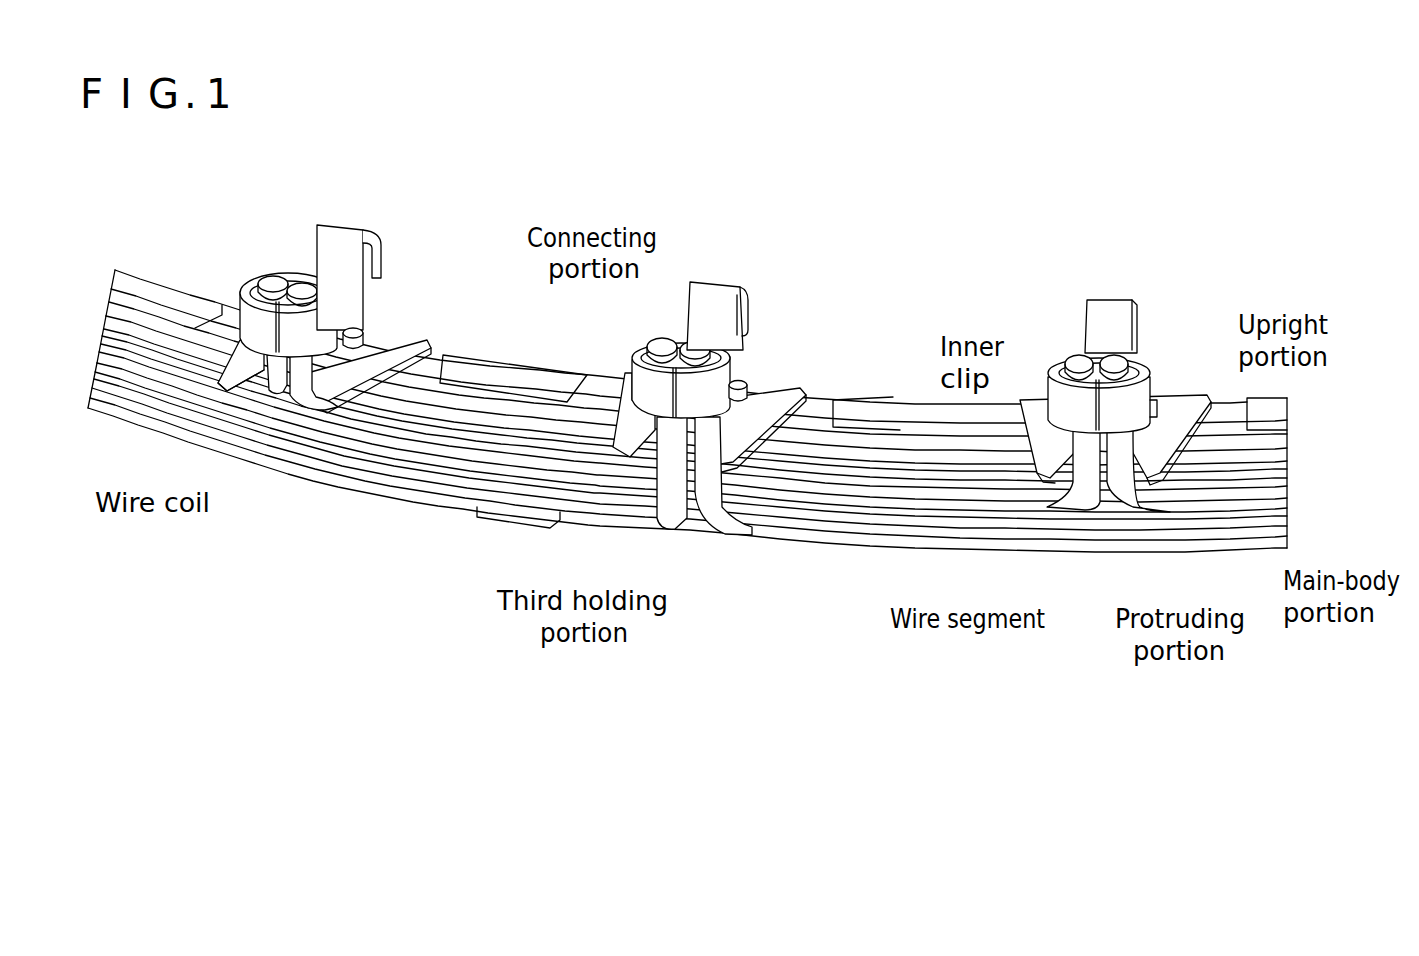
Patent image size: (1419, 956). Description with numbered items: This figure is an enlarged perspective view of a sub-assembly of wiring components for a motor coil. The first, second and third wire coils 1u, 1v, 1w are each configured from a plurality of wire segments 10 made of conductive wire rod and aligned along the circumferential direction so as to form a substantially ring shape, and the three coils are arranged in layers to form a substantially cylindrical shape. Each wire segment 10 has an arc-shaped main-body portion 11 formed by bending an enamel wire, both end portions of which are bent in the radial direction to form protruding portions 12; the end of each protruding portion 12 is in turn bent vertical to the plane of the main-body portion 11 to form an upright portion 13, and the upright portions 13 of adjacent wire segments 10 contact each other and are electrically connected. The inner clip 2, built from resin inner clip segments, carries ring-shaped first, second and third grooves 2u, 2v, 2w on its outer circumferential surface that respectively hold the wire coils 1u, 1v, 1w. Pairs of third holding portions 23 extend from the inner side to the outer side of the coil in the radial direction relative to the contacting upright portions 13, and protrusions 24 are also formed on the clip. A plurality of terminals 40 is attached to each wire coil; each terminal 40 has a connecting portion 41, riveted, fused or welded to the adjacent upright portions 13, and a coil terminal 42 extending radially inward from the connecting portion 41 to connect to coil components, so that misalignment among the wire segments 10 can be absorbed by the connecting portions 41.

The first wire coil 1u is at (95, 342).
The second wire coil 1v is at (100, 313).
The third wire coil 1w is at (86, 381).
The inner clip 2 is at (880, 398).
The first groove 2u is at (391, 398).
The second groove 2v is at (1126, 455).
The third groove 2w is at (700, 436).
The wire segment 10 is at (1017, 480).
The main-body portion 11 is at (1236, 481).
The protruding portion 12 is at (1148, 491).
The upright portion 13 is at (1082, 362).
The third holding portion 23 is at (626, 437).
The protrusion 24 is at (360, 338).
The terminal 40 is at (758, 268).
The connecting portion 41 is at (639, 352).
The coil terminal 42 is at (746, 315).